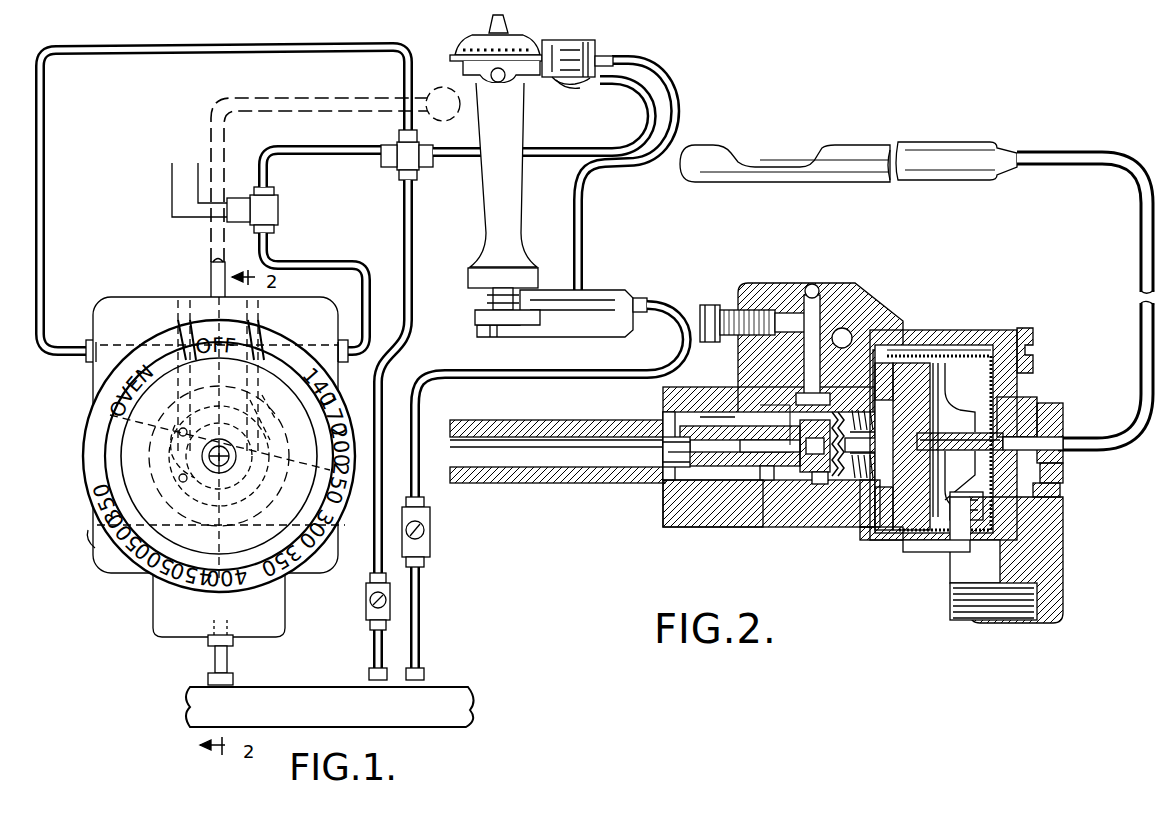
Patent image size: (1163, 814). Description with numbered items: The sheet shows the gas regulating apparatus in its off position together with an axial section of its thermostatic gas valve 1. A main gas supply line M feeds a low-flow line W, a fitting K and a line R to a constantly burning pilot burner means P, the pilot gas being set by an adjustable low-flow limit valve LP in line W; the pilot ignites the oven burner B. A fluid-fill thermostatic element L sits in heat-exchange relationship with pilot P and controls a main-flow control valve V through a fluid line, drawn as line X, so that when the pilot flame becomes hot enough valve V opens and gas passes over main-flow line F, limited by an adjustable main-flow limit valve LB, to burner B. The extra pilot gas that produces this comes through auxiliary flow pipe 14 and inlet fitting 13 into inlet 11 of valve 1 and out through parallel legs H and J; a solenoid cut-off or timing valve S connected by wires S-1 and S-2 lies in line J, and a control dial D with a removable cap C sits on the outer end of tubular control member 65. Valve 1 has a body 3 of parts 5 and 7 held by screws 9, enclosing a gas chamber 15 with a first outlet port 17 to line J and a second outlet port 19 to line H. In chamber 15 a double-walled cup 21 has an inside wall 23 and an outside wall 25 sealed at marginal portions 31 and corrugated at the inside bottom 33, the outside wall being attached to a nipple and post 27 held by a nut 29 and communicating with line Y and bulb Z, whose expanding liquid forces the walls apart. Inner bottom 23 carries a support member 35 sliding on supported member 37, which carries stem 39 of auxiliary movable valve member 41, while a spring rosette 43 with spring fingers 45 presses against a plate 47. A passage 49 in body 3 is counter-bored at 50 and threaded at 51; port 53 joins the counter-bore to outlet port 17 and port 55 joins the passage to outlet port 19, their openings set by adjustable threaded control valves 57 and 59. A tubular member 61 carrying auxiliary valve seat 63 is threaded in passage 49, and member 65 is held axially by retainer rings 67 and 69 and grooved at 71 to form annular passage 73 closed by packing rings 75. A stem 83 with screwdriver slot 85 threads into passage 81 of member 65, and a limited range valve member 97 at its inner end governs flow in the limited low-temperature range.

In FIG. 1, the leg portion H is at (38, 245).
In FIG. 1, the line Y is at (210, 274).
In FIG. 2, the line Y is at (1140, 237).
In FIG. 1, the temperature-responsive bulb Z is at (441, 90).
In FIG. 2, the temperature-responsive bulb Z is at (935, 148).
In FIG. 1, the solenoid operated cut-off valve S is at (278, 208).
In FIG. 1, the wire S-1 is at (172, 170).
In FIG. 1, the wire S-2 is at (198, 168).
In FIG. 1, the leg portion J is at (330, 262).
In FIG. 1, the fitting K is at (418, 170).
In FIG. 1, the line R is at (470, 156).
In FIG. 1, the pipe X is at (583, 198).
In FIG. 1, the oven burner B is at (472, 32).
In FIG. 1, the thermostatic element L is at (556, 50).
In FIG. 1, the pilot burner means P is at (562, 82).
In FIG. 1, the main-flow control valve V is at (558, 325).
In FIG. 1, the low-flow line W is at (418, 330).
In FIG. 1, the main-flow line F is at (480, 376).
In FIG. 1, the low-flow limit valve LP is at (370, 602).
In FIG. 1, the main-flow limit valve LB is at (430, 546).
In FIG. 1, the main gas supply line M is at (415, 716).
In FIG. 1, the thermostatic gas valve 1 is at (78, 413).
In FIG. 1, the body 3 is at (90, 528).
In FIG. 2, the body 3 is at (710, 538).
In FIG. 2, the body part 5 is at (860, 287).
In FIG. 2, the body part 7 is at (966, 328).
In FIG. 2, the screws 9 is at (1030, 333).
In FIG. 1, the gas inlet 11 is at (278, 604).
In FIG. 2, the gas inlet 11 is at (981, 616).
In FIG. 1, the inlet fitting 13 is at (235, 634).
In FIG. 1, the auxiliary flow line 14 is at (228, 666).
In FIG. 2, the gas chamber 15 is at (912, 560).
In FIG. 1, the first outlet port 17 is at (326, 346).
In FIG. 2, the first outlet port 17 is at (872, 315).
In FIG. 1, the second outlet port 19 is at (118, 347).
In FIG. 2, the second outlet port 19 is at (905, 360).
In FIG. 2, the double-walled cup 21 is at (1003, 529).
In FIG. 2, the inside wall 23 is at (1048, 494).
In FIG. 2, the outside wall 25 is at (974, 498).
In FIG. 2, the nipple and post 27 is at (1072, 426).
In FIG. 2, the nut 29 is at (1065, 476).
In FIG. 2, the marginal portions 31 is at (872, 556).
In FIG. 2, the inside bottom 33 is at (985, 516).
In FIG. 2, the support member 35 is at (1020, 406).
In FIG. 2, the supported member 37 is at (1060, 413).
In FIG. 2, the stem 39 is at (971, 457).
In FIG. 2, the auxiliary movable valve member 41 is at (889, 548).
In FIG. 2, the spring rosette 43 is at (950, 372).
In FIG. 2, the spring fingers 45 is at (957, 402).
In FIG. 2, the plate 47 is at (937, 350).
In FIG. 2, the passage 49 is at (745, 500).
In FIG. 2, the counter-bore 50 is at (812, 500).
In FIG. 2, the threads 51 is at (834, 500).
In FIG. 1, the port 53 is at (260, 398).
In FIG. 2, the port 53 is at (832, 294).
In FIG. 1, the port 55 is at (180, 421).
In FIG. 2, the port 55 is at (760, 406).
In FIG. 1, the adjustable threaded control valve 57 is at (270, 322).
In FIG. 2, the adjustable threaded control valve 57 is at (710, 305).
In FIG. 1, the adjustable threaded control valve 59 is at (172, 323).
In FIG. 2, the tubular member 61 is at (858, 512).
In FIG. 2, the auxiliary valve seat 63 is at (926, 352).
In FIG. 1, the tubular control member 65 is at (208, 488).
In FIG. 2, the tubular control member 65 is at (645, 482).
In FIG. 2, the retainer ring 67 is at (780, 483).
In FIG. 2, the retainer ring 69 is at (665, 492).
In FIG. 2, the groove 71 is at (700, 522).
In FIG. 2, the annular passage 73 is at (722, 417).
In FIG. 2, the packing rings 75 is at (668, 412).
In FIG. 1, the passage 81 is at (227, 428).
In FIG. 2, the passage 81 is at (605, 468).
In FIG. 2, the stem 83 is at (648, 484).
In FIG. 1, the screwdriver control slot 85 is at (253, 474).
In FIG. 2, the screwdriver control slot 85 is at (652, 448).
In FIG. 2, the limited range valve member 97 is at (822, 505).
In FIG. 1, the removable cap C is at (189, 465).
In FIG. 1, the control dial D is at (102, 481).